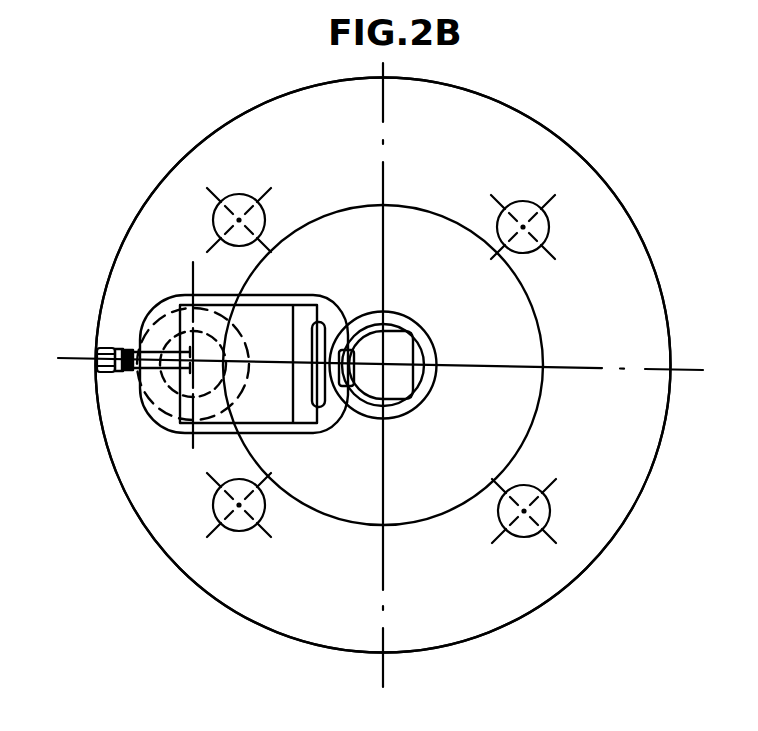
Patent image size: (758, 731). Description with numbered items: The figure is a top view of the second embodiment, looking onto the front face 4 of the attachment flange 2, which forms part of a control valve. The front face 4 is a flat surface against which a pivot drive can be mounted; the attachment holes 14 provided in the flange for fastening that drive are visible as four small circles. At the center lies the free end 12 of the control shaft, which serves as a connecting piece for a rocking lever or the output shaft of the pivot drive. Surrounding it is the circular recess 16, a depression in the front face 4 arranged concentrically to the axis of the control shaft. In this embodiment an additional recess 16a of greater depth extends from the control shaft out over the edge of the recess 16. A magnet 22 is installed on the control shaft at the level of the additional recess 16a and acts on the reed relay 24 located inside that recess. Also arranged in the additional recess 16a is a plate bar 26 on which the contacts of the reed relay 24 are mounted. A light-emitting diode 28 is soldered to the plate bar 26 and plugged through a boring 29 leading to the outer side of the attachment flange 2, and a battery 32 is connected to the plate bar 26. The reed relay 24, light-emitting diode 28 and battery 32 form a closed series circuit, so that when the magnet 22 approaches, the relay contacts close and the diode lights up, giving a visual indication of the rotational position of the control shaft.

The attachment flange 2 is at (637, 235).
The front face 4 is at (626, 285).
The free end 12 is at (393, 393).
The mounting holes 14 is at (538, 204).
The recess 16 is at (512, 416).
The additional recess 16a is at (163, 303).
The magnet 22 is at (342, 357).
The reed relay 24 is at (319, 400).
The plate bar 26 is at (237, 433).
The light-emitting diode 28 is at (97, 350).
The boring 29 is at (97, 368).
The battery 32 is at (153, 402).